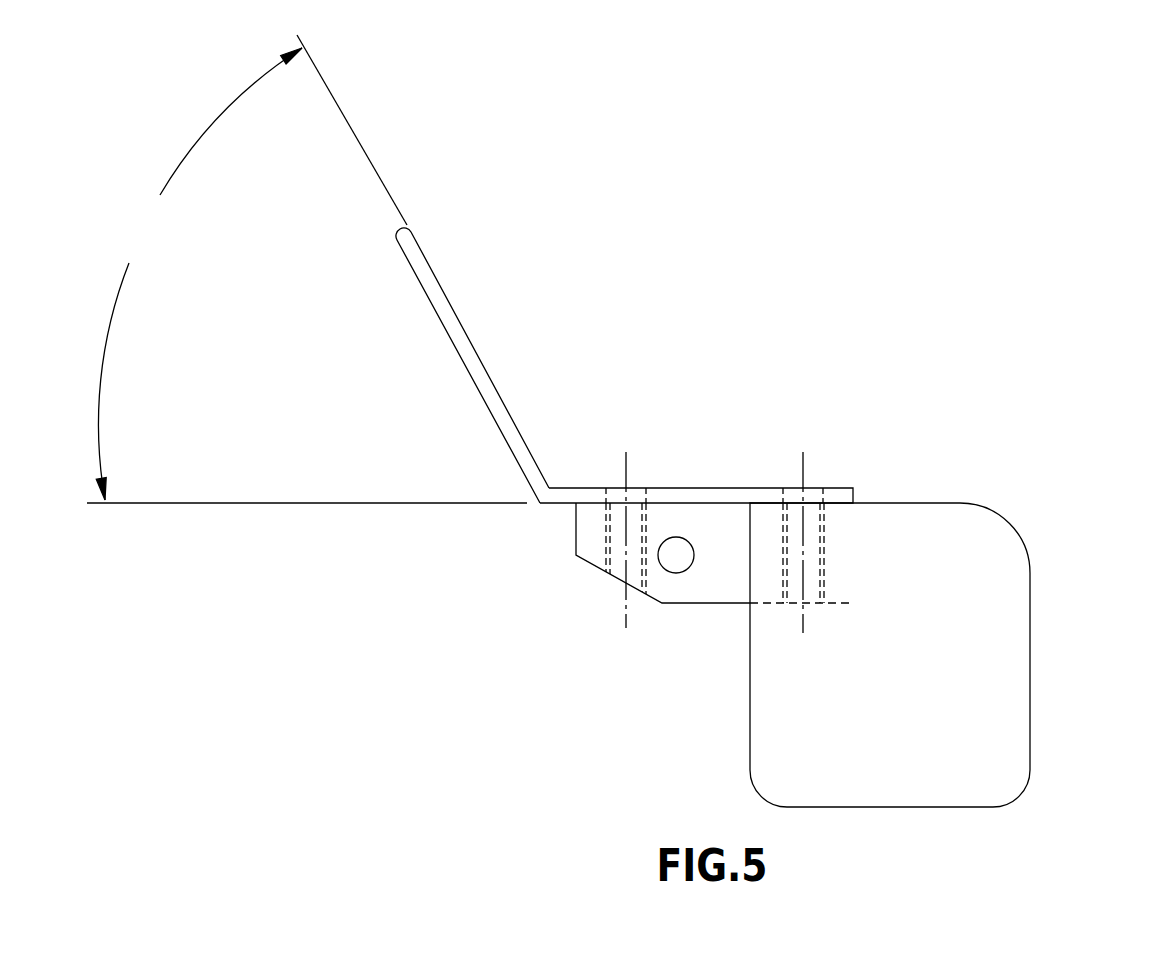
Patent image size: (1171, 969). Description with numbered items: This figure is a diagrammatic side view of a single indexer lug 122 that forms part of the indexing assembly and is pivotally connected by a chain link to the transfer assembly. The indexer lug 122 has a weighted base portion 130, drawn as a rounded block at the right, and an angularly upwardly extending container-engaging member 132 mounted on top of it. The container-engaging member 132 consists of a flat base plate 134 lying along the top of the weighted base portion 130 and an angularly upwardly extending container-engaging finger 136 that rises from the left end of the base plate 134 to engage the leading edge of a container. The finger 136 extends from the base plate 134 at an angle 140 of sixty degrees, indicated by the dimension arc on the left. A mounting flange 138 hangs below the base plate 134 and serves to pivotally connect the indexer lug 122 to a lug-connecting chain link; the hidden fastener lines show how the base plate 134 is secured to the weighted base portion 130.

The indexer lug 122 is at (1018, 350).
The weighted base portion 130 is at (978, 694).
The container-engaging member 132 is at (530, 407).
The base plate 134 is at (732, 488).
The container-engaging finger 136 is at (453, 320).
The mounting flange 138 is at (713, 575).
The angle 140 is at (251, 267).